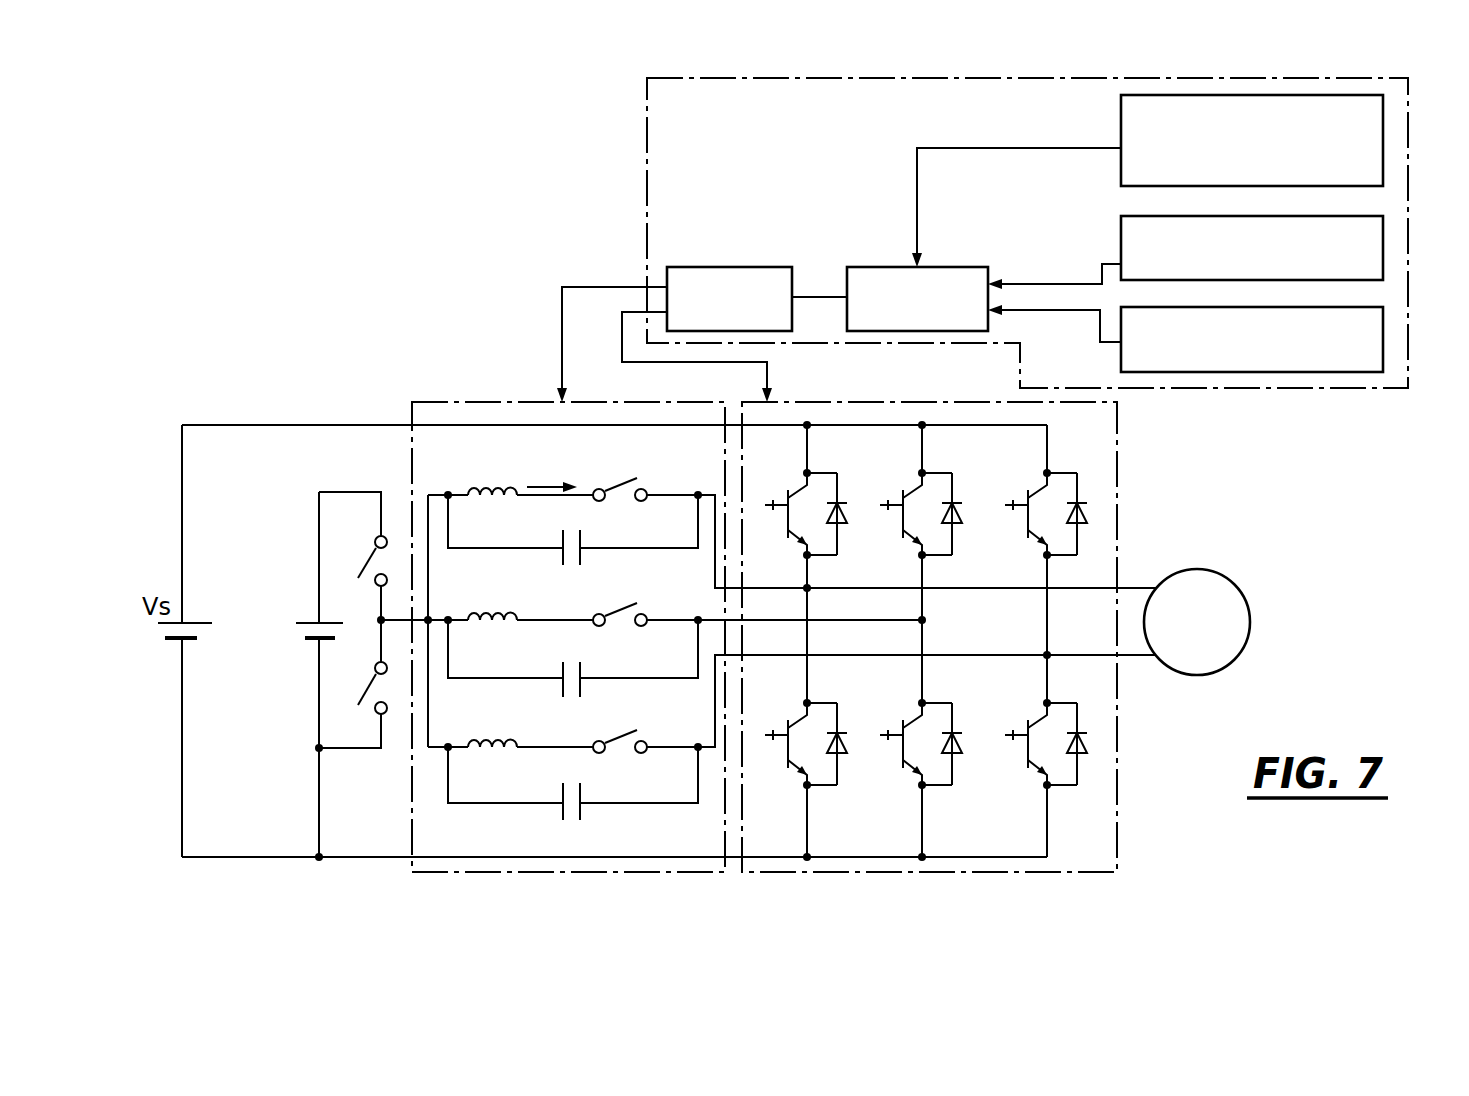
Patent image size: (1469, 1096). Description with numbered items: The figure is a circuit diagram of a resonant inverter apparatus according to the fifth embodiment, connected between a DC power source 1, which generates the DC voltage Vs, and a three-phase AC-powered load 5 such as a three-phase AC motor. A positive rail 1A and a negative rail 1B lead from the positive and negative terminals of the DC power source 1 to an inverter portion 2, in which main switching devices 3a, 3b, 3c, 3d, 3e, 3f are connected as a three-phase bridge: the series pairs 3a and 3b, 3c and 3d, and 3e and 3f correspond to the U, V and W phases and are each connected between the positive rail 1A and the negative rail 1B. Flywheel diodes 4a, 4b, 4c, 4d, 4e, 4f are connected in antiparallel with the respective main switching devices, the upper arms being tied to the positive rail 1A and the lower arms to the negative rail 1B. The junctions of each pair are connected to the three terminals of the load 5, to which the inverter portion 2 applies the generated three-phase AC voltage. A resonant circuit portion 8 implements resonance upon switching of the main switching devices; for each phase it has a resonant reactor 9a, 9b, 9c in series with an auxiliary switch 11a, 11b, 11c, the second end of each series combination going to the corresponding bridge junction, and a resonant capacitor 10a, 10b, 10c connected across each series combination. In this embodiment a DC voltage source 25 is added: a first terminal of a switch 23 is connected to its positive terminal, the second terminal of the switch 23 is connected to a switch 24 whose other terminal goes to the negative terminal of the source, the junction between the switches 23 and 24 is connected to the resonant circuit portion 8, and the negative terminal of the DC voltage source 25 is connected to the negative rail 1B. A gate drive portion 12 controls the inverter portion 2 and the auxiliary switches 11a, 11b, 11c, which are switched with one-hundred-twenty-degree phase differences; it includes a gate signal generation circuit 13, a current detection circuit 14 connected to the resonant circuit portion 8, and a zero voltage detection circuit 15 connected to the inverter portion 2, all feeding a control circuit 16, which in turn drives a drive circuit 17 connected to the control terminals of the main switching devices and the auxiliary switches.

The DC power source 1 is at (172, 642).
The positive rail 1A is at (355, 425).
The negative rail 1B is at (370, 860).
The inverter portion 2 is at (1116, 475).
The main switching device 3a is at (776, 514).
The main switching device 3b is at (776, 748).
The main switching device 3c is at (891, 514).
The main switching device 3d is at (891, 748).
The main switching device 3e is at (1011, 514).
The main switching device 3f is at (1013, 746).
The flywheel diode 4a is at (840, 502).
The flywheel diode 4b is at (840, 733).
The flywheel diode 4c is at (957, 502).
The flywheel diode 4d is at (957, 733).
The flywheel diode 4e is at (1074, 500).
The flywheel diode 4f is at (1077, 733).
The load 5 is at (1244, 588).
The resonant circuit portion 8 is at (515, 402).
The resonant reactor 9a is at (498, 492).
The resonant reactor 9b is at (498, 614).
The resonant reactor 9c is at (498, 740).
The resonant capacitor 10a is at (563, 548).
The resonant capacitor 10b is at (562, 682).
The resonant capacitor 10c is at (562, 806).
The auxiliary switch 11a is at (640, 486).
The auxiliary switch 11b is at (640, 608).
The auxiliary switch 11c is at (634, 738).
The gate drive portion 12 is at (647, 117).
The gate signal generation circuit 13 is at (1383, 121).
The current detection circuit 14 is at (1383, 232).
The zero voltage detection circuit 15 is at (1383, 326).
The control circuit 16 is at (880, 267).
The drive circuit 17 is at (720, 267).
The switch 23 is at (365, 555).
The switch 24 is at (366, 698).
The DC voltage source 25 is at (307, 620).